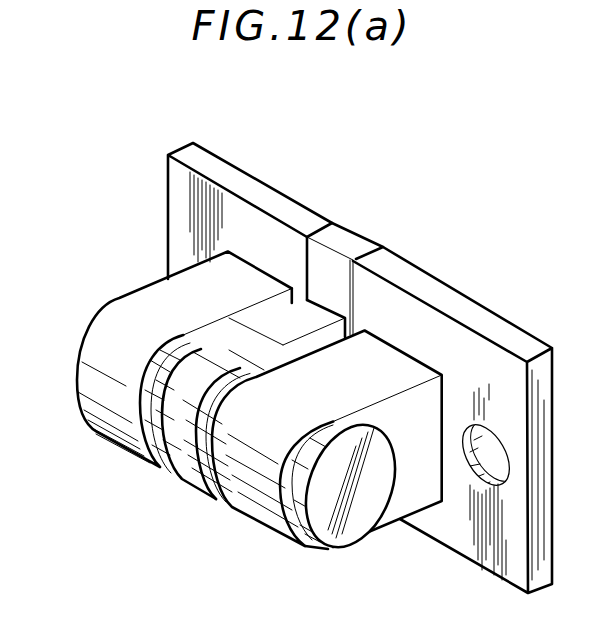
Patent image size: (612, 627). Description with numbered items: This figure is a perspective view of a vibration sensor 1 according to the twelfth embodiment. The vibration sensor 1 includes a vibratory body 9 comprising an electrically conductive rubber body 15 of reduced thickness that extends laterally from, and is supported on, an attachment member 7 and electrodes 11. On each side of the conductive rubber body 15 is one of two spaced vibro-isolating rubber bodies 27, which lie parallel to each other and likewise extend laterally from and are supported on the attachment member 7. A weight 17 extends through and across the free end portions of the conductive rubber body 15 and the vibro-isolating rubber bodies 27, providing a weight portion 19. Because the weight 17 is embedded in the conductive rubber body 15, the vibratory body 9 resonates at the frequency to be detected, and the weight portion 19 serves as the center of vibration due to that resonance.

The vibration sensor 1 is at (26, 253).
The attachment member 7 is at (514, 334).
The vibratory body 9 is at (115, 428).
The electrodes 11 is at (342, 237).
The conductive rubber body 15 is at (283, 330).
The weight 17 is at (362, 523).
The weight portion 19 is at (335, 538).
The vibro-isolating rubber bodies 27 is at (188, 290).